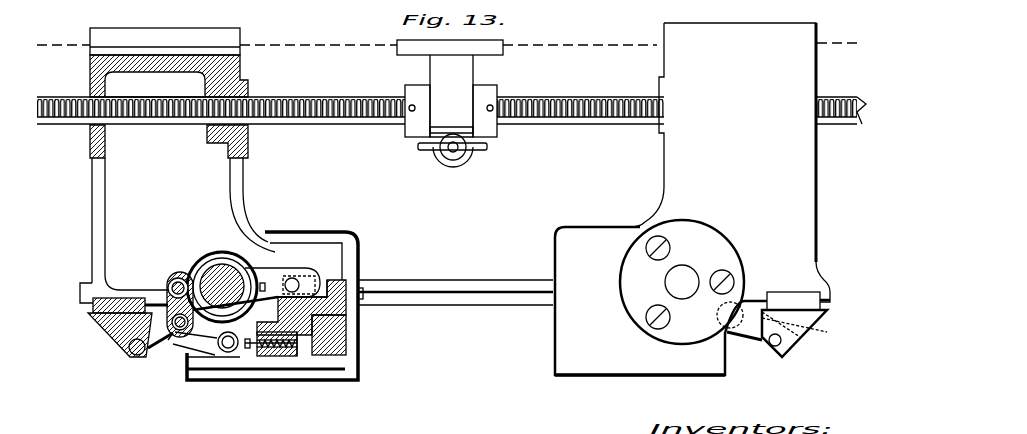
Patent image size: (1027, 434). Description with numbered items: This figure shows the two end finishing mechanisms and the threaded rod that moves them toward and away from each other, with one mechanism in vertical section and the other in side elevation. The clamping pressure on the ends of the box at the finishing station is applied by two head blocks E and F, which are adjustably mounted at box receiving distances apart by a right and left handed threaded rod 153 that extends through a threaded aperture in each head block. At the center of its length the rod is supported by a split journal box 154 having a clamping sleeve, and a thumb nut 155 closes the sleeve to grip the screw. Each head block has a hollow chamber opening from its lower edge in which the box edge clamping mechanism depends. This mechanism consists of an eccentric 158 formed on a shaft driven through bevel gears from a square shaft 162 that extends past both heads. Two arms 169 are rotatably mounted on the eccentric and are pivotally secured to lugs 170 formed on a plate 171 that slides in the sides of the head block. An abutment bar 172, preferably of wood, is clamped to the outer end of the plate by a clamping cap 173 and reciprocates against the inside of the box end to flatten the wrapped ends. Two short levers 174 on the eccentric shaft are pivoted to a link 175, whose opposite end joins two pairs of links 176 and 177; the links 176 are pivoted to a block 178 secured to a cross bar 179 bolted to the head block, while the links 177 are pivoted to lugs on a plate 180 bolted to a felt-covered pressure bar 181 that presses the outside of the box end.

The right and left handed threaded rod 153 is at (332, 125).
The split journal box 154 is at (432, 113).
The thumb nut 155 is at (478, 148).
The eccentric 158 is at (215, 268).
The square shaft 162 is at (455, 285).
The arms 169 is at (263, 263).
The lugs 170 is at (308, 267).
The plate 171 is at (337, 275).
The abutment bar 172 is at (350, 348).
The clamping cap 173 is at (358, 325).
The short levers 174 is at (183, 268).
The link 175 is at (172, 340).
The links 176 is at (752, 342).
The links 177 is at (205, 356).
The block 178 is at (807, 330).
The cross bar 179 is at (803, 297).
The plate 180 is at (250, 357).
The pressure bar 181 is at (276, 357).
The head block E is at (243, 173).
The head block F is at (664, 159).